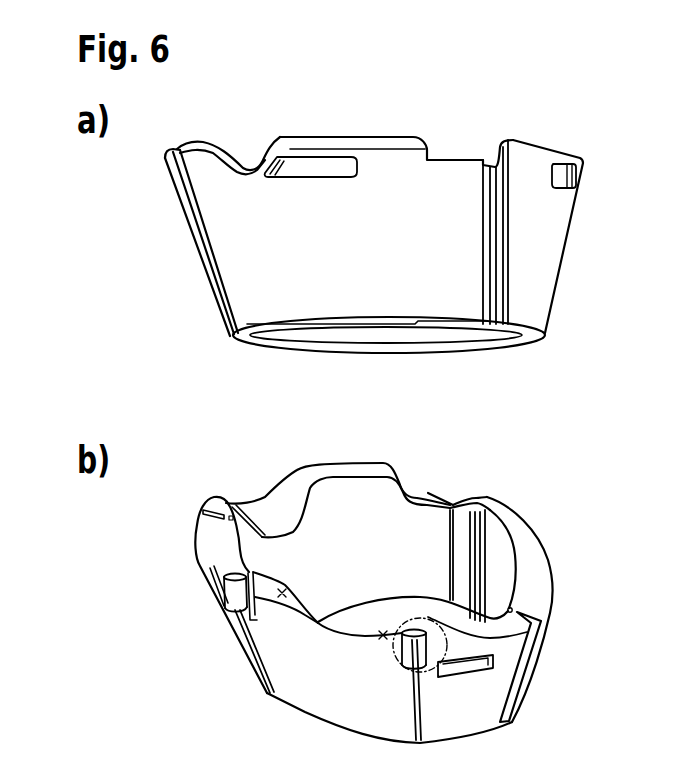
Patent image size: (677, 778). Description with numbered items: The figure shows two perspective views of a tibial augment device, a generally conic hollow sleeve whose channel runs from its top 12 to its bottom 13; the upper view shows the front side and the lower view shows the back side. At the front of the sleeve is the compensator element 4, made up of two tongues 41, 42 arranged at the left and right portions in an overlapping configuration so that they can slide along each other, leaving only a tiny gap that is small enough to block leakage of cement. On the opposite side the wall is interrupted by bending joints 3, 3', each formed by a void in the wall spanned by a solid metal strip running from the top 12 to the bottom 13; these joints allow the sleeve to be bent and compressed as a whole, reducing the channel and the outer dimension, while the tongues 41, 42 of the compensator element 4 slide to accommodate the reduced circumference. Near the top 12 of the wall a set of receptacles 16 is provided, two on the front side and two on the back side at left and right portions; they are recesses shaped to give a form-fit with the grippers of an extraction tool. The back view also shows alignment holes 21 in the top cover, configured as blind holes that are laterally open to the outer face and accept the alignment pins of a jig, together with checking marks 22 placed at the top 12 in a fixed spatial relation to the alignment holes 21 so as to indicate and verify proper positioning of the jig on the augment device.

The bending joint 3 is at (328, 675).
The bending joint 3' is at (350, 436).
The compensator element 4 is at (462, 147).
The top 12 is at (540, 140).
The bottom 13 is at (533, 334).
The receptacle 16 is at (318, 168).
The alignment hole 21 is at (230, 615).
The checking mark 22 is at (283, 590).
The tongue 41 is at (433, 177).
The tongue 42 is at (490, 163).